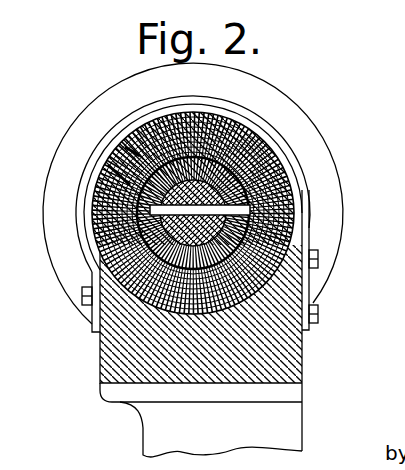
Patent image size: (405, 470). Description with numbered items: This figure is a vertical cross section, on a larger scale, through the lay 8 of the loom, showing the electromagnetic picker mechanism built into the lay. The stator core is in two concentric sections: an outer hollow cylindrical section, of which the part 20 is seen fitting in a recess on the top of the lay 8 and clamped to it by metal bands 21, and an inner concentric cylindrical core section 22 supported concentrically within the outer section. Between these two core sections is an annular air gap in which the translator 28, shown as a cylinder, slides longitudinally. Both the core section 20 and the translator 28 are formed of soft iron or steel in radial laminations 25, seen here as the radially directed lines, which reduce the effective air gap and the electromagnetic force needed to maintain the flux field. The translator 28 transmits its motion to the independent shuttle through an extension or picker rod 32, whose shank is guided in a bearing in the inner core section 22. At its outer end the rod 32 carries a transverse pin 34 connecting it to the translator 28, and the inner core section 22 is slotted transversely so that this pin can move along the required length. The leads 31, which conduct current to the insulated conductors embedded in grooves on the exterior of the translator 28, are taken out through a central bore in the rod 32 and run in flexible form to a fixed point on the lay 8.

The lay 8 is at (123, 321).
The part of outer core section 20 is at (287, 167).
The metal bands 21 is at (309, 226).
The inner core section 22 is at (265, 224).
The radial laminations 25 is at (118, 177).
The translator 28 is at (268, 151).
The leads 31 is at (92, 246).
The picker rod 32 is at (230, 143).
The transverse pin 34 is at (283, 187).